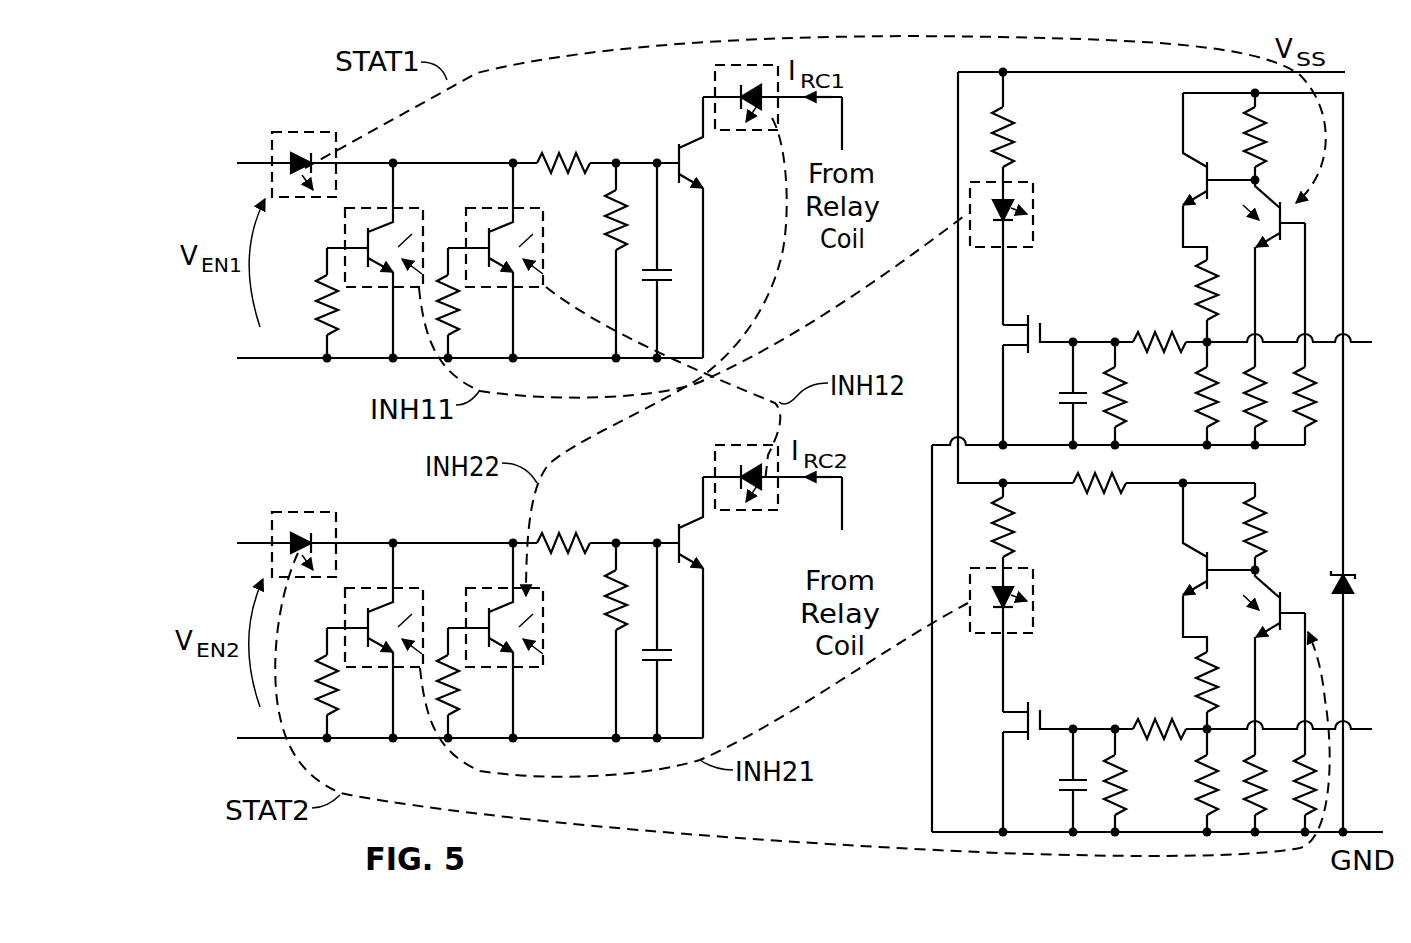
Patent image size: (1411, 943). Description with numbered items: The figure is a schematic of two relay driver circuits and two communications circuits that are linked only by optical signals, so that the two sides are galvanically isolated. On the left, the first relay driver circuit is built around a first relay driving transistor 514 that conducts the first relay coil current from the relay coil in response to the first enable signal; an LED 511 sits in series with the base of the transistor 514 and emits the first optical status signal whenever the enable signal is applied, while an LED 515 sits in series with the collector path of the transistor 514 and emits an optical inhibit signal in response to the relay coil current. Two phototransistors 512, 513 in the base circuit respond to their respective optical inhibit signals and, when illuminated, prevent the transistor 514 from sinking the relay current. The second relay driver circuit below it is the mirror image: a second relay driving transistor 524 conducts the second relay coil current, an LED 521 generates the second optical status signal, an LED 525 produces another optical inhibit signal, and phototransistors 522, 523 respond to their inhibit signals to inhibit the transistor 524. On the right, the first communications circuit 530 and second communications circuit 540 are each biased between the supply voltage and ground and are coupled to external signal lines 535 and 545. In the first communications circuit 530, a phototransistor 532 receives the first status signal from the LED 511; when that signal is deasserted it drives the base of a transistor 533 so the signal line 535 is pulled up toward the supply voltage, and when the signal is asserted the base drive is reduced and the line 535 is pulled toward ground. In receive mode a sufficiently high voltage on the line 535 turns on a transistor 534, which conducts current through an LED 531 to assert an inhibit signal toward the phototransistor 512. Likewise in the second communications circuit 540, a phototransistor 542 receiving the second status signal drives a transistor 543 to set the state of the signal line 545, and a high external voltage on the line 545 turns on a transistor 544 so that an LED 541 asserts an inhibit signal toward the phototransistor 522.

The LED 511 is at (300, 130).
The first phototransistor 512 is at (408, 207).
The second phototransistor 513 is at (544, 248).
The first relay driving transistor 514 is at (697, 162).
The LED 515 is at (715, 82).
The LED 521 is at (280, 529).
The phototransistor 522 is at (401, 640).
The phototransistor 523 is at (521, 640).
The second relay driving transistor 524 is at (720, 607).
The LED 525 is at (748, 473).
The first communications circuit 530 is at (1139, 322).
The LED 531 is at (1015, 182).
The phototransistor 532 is at (1270, 192).
The transistor 533 is at (1180, 180).
The transistor 534 is at (1048, 315).
The external signal line 535 is at (1372, 342).
The second communications circuit 540 is at (1126, 641).
The LED 541 is at (1015, 568).
The phototransistor 542 is at (1270, 582).
The transistor 543 is at (1180, 570).
The transistor 544 is at (1048, 702).
The external signal line 545 is at (1372, 729).